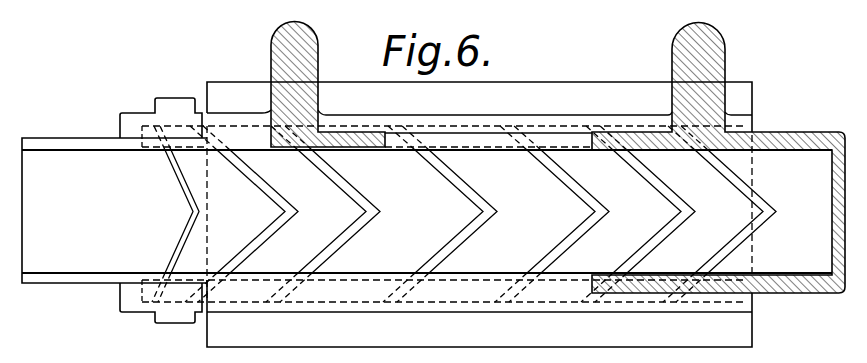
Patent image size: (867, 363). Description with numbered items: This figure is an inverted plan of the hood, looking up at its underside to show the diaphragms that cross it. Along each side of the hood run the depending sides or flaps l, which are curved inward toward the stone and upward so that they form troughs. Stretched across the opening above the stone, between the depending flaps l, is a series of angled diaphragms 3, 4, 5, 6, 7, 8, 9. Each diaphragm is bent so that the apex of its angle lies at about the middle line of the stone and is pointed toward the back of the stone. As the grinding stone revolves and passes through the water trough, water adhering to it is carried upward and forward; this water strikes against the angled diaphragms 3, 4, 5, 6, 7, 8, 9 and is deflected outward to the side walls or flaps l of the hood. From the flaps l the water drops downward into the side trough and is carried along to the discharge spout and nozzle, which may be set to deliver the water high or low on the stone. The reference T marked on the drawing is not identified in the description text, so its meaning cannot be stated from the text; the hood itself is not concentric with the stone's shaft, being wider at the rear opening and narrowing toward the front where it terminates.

The angled diaphragm 3 is at (719, 214).
The angled diaphragm 4 is at (638, 214).
The angled diaphragm 5 is at (552, 214).
The angled diaphragm 6 is at (440, 214).
The angled diaphragm 7 is at (323, 214).
The angled diaphragm 8 is at (241, 214).
The angled diaphragm 9 is at (175, 214).
The depending sides or flaps l is at (449, 135).
The housing T is at (479, 214).